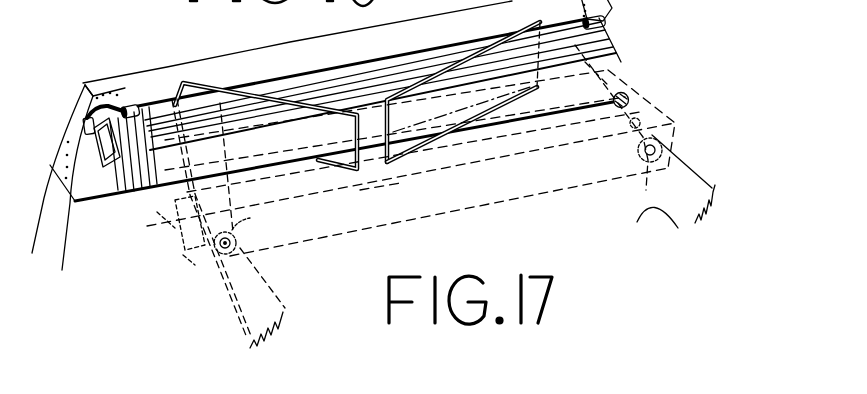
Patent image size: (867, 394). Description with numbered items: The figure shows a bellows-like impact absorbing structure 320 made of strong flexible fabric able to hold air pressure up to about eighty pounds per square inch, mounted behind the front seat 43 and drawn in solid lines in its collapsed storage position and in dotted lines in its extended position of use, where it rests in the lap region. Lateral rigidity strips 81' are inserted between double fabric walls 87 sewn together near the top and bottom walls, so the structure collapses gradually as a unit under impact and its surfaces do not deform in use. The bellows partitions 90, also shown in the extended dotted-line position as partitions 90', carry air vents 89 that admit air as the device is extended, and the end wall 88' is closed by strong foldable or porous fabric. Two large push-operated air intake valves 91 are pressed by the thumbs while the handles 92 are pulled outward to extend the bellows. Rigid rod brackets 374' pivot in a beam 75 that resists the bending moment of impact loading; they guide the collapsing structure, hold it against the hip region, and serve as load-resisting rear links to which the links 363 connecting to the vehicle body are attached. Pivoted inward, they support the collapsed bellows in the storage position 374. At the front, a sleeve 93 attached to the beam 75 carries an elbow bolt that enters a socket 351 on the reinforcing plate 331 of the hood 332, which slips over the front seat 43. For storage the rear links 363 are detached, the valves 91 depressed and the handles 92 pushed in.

The front seat 43 is at (62, 177).
The beam 75 is at (83, 168).
The bellows partitions 90 is at (348, 101).
The header rail (phantom position) 90' is at (368, 207).
The reinforcing plate 331 is at (108, 94).
The hood 332 is at (106, 86).
The clip 351 is at (83, 126).
The storage position of brackets 374 is at (357, 90).
The brackets 374' is at (404, 191).
The sleeve 93 is at (607, 29).
The panel 320 is at (433, 220).
The rear links 363 is at (230, 310).
The air intake valves 91 is at (239, 245).
The handles 92 is at (250, 222).
The bracket 88' is at (141, 223).
The plate 81' is at (168, 228).
The double fabric walls 87 is at (181, 262).
The air vents 89 is at (629, 123).